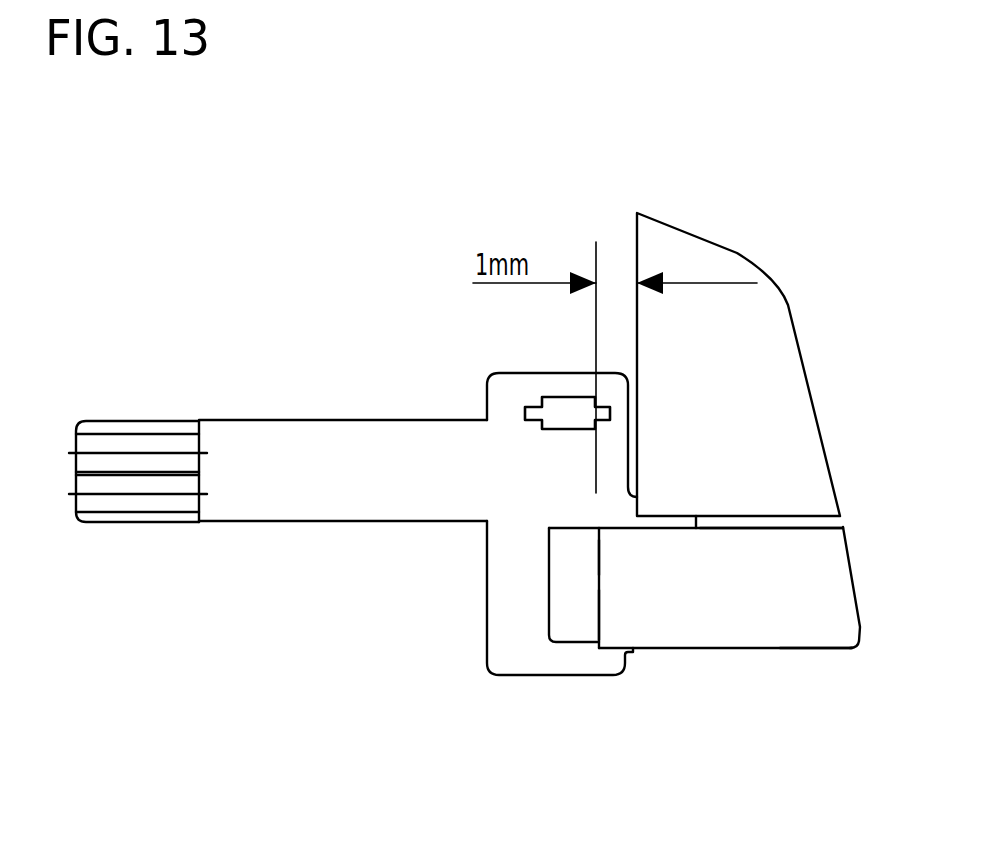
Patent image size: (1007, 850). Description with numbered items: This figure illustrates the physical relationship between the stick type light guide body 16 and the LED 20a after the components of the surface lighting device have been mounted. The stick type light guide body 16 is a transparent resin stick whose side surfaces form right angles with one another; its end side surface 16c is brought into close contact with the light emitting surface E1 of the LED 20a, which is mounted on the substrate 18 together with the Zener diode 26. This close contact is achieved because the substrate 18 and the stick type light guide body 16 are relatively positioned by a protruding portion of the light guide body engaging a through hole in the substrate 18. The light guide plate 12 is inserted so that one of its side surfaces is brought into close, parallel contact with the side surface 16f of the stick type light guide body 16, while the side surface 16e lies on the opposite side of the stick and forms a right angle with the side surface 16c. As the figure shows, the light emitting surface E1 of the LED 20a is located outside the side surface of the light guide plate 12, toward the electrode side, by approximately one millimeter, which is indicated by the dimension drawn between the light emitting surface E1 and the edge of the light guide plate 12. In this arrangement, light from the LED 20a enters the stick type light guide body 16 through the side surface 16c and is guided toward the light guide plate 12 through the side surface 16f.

The light guide plate 12 is at (658, 248).
The substrate 18 is at (335, 406).
The Zener diode 26 is at (572, 408).
The stick type light guide body 16 is at (772, 618).
The side surface 16c is at (600, 596).
The side surface 16e is at (806, 525).
The side surface 16f is at (838, 650).
The LED 20a is at (569, 620).
The light emitting surface E1 is at (600, 570).